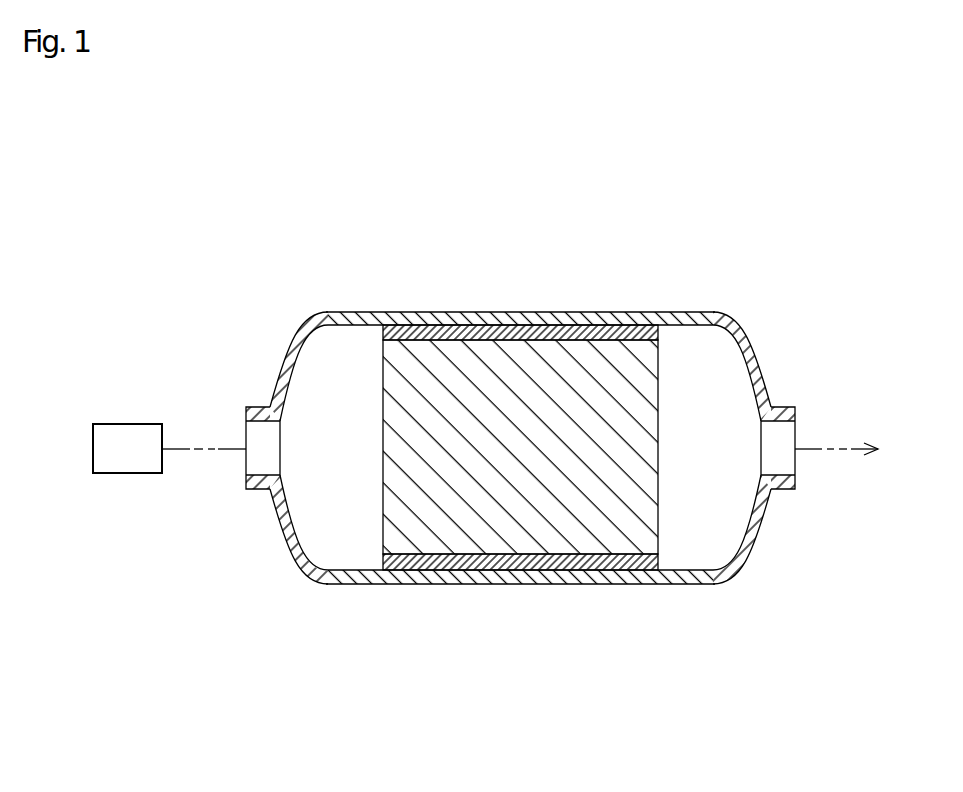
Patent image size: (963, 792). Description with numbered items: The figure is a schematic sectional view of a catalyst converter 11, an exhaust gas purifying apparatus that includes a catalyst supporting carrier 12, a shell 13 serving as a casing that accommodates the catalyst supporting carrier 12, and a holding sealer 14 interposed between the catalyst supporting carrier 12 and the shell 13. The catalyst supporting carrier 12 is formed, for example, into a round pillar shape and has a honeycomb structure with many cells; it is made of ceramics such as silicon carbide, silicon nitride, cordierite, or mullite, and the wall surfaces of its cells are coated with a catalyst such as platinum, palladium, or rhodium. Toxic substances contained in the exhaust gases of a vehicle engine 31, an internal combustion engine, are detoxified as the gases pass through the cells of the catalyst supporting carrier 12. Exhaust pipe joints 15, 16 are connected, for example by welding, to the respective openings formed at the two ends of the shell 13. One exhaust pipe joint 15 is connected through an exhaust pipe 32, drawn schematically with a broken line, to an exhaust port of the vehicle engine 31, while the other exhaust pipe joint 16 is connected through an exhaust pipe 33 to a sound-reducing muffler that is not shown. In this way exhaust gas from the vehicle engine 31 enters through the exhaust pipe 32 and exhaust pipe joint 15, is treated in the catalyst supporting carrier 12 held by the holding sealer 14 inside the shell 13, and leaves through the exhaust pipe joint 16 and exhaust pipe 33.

The catalyst converter 11 is at (428, 250).
The catalyst supporting carrier 12 is at (527, 530).
The shell 13 is at (645, 322).
The holding sealer 14 is at (521, 328).
The exhaust pipe joint 15 is at (292, 353).
The exhaust pipe joint 16 is at (752, 345).
The vehicle engine 31 is at (125, 467).
The exhaust pipe 32 is at (215, 453).
The exhaust pipe 33 is at (828, 452).